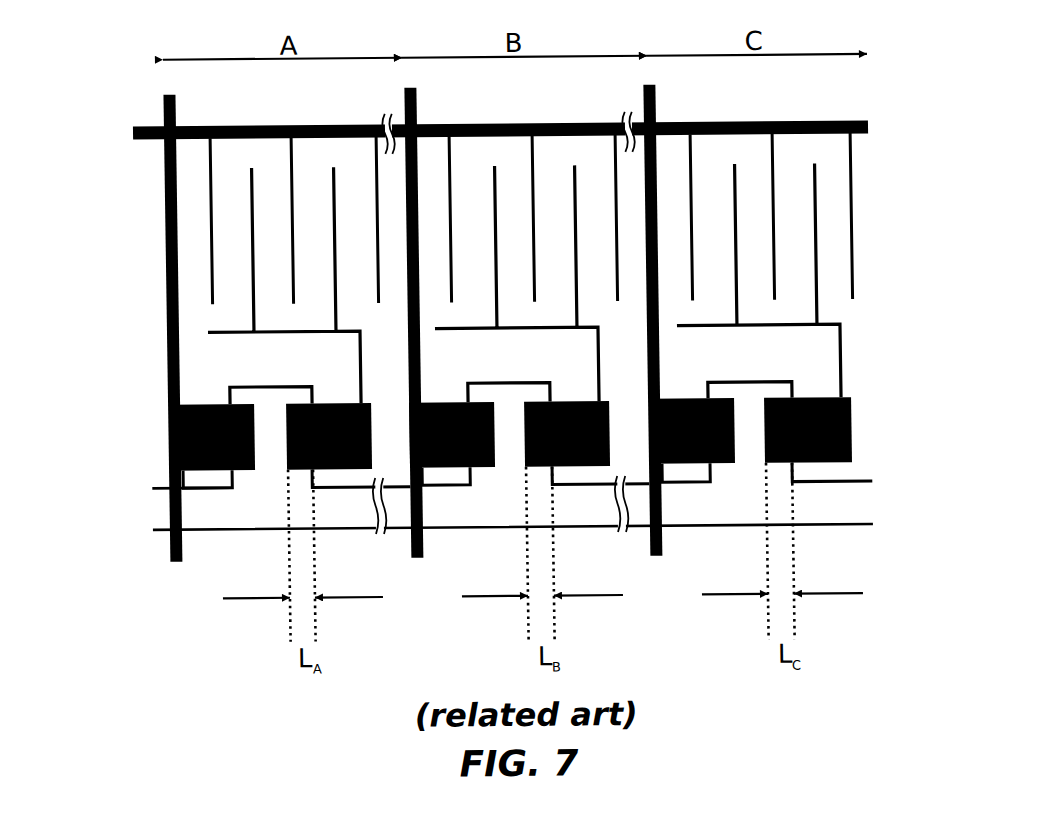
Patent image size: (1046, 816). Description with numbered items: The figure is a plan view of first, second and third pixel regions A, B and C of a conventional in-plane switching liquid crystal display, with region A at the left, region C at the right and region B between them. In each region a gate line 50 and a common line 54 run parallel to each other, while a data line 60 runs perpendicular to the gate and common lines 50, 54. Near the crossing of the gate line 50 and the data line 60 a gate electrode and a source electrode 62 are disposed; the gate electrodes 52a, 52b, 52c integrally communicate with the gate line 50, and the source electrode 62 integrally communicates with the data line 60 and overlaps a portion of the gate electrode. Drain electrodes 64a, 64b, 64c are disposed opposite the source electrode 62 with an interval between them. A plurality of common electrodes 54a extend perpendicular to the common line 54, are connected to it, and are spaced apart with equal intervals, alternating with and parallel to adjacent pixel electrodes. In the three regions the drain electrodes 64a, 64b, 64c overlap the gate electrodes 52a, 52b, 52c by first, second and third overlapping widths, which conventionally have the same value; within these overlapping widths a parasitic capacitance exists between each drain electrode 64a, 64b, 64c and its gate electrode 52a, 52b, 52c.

The gate line 50 is at (237, 518).
The gate electrode 52a is at (259, 388).
The gate electrode 52b is at (506, 397).
The gate electrode 52c is at (756, 390).
The common line 54 is at (246, 126).
The common electrode 54a is at (210, 175).
The data line 60 is at (168, 254).
The source electrode 62 is at (202, 471).
The drain electrode 64a is at (361, 469).
The drain electrode 64b is at (601, 468).
The drain electrode 64c is at (835, 466).